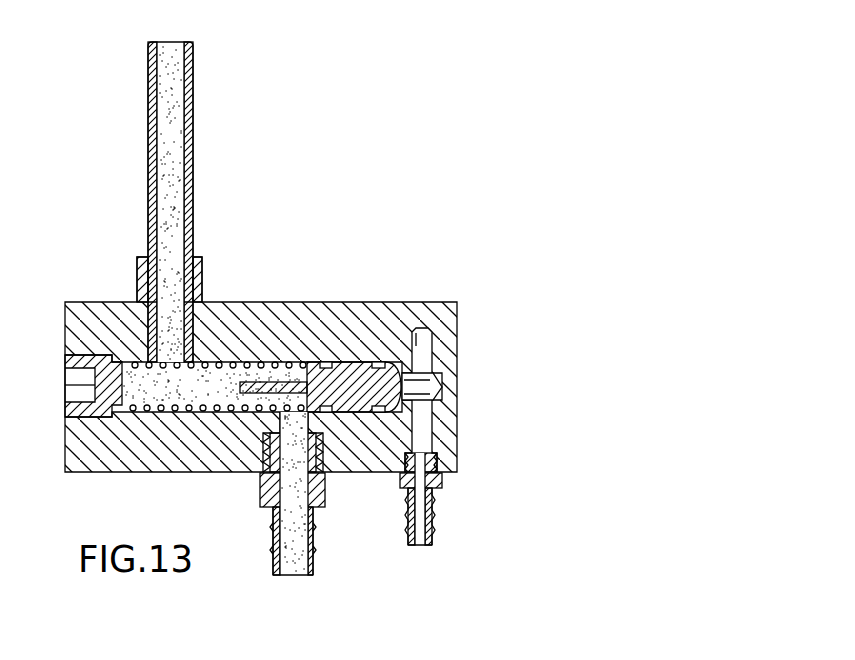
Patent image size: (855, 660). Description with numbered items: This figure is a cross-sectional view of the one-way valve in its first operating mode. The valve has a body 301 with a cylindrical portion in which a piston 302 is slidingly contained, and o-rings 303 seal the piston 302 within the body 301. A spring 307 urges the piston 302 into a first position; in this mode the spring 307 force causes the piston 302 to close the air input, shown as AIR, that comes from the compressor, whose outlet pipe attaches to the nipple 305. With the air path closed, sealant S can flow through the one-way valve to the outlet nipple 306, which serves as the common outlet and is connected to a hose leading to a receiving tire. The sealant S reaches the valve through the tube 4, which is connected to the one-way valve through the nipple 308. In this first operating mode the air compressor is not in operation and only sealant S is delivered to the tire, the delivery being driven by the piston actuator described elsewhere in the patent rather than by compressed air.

The tube 4 is at (193, 168).
The sealant S is at (167, 183).
The body 301 is at (448, 303).
The piston 302 is at (417, 397).
The o-ring 303 is at (377, 363).
The nipple 305 is at (427, 546).
The outlet nipple 306 is at (321, 551).
The spring 307 is at (222, 363).
The nipple 308 is at (137, 270).
The air input AIR is at (440, 388).